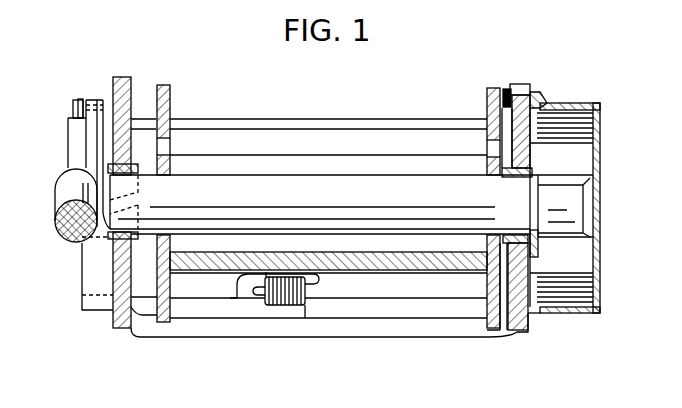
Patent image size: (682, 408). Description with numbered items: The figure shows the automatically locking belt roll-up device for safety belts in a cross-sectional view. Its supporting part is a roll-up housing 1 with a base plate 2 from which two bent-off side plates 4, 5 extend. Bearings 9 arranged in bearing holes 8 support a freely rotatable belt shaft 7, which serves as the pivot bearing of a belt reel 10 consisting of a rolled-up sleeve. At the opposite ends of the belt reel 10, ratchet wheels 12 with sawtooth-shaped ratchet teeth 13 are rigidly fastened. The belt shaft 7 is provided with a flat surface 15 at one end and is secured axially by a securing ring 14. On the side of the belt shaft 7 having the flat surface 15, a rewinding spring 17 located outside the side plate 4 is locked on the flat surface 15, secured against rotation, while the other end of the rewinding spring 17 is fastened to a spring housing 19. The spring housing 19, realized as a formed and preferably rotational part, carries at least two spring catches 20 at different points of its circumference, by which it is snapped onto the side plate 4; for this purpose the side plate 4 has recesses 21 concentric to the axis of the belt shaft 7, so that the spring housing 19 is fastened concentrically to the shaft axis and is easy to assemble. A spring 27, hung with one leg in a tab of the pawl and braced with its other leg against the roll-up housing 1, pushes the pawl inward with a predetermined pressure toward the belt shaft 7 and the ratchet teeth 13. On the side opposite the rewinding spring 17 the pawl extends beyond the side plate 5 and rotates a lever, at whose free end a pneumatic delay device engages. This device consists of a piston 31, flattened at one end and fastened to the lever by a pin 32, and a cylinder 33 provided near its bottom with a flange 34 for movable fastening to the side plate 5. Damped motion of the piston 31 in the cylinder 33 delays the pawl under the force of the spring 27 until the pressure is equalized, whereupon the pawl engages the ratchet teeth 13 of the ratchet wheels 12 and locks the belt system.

The roll-up housing 1 is at (462, 345).
The base plate 2 is at (203, 288).
The side plate 4 is at (523, 125).
The side plate 5 is at (113, 78).
The belt shaft 7 is at (335, 190).
The bearing holes 8 is at (522, 233).
The bearings 9 is at (117, 247).
The belt reel 10 is at (393, 262).
The ratchet wheels 12 is at (166, 85).
The ratchet teeth 13 is at (160, 316).
The securing ring 14 is at (540, 246).
The flat surface 15 is at (573, 178).
The rewinding spring 17 is at (585, 127).
The spring housing 19 is at (583, 103).
The spring catches 20 is at (515, 83).
The recesses 21 is at (527, 86).
The spring 27 is at (284, 306).
The piston 31 is at (68, 136).
The pin 32 is at (73, 104).
The cylinder 33 is at (67, 190).
The flange 34 is at (82, 98).